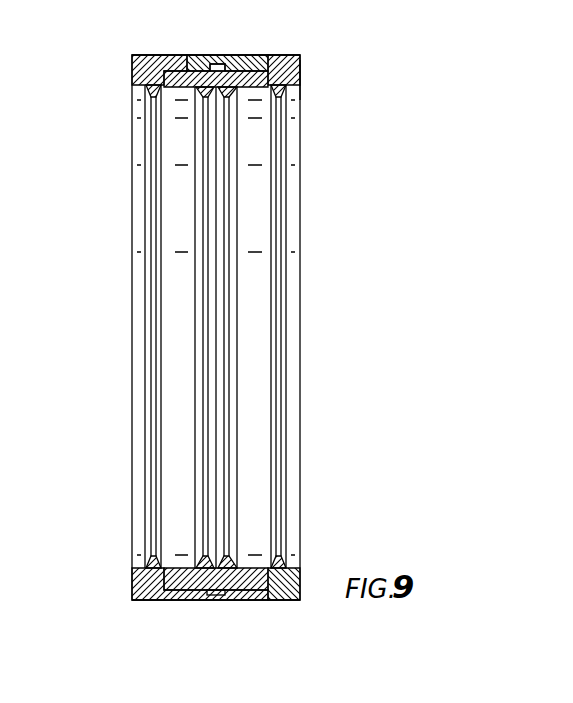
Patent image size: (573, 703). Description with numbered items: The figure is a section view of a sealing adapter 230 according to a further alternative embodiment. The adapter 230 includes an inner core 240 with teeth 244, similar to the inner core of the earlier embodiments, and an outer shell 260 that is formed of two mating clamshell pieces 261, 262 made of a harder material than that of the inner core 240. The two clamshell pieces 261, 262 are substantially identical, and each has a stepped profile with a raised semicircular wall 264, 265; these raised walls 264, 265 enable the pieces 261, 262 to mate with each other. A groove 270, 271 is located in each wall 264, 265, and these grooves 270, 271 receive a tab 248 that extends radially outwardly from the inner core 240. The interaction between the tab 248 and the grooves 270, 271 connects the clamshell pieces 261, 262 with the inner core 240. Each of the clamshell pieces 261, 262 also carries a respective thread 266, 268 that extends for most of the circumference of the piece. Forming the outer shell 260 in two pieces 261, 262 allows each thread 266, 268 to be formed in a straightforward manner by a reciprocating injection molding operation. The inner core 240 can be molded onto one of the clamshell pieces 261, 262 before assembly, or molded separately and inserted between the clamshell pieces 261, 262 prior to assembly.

The adapter 230 is at (430, 150).
The inner core 240 is at (250, 255).
The teeth 244 is at (235, 414).
The tab 248 is at (221, 70).
The outer shell 260 is at (372, 78).
The clamshell piece 261 is at (300, 72).
The clamshell piece 262 is at (134, 72).
The raised semicircular wall 264 is at (253, 56).
The raised semicircular wall 265 is at (173, 596).
The thread 266 is at (279, 240).
The thread 268 is at (162, 379).
The groove 270 is at (212, 64).
The groove 271 is at (216, 594).